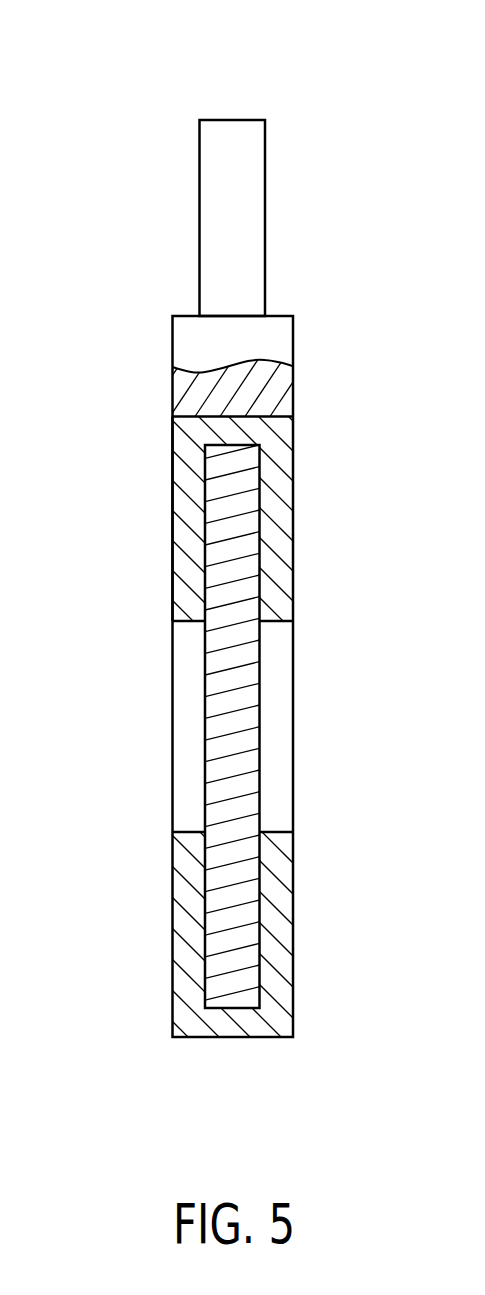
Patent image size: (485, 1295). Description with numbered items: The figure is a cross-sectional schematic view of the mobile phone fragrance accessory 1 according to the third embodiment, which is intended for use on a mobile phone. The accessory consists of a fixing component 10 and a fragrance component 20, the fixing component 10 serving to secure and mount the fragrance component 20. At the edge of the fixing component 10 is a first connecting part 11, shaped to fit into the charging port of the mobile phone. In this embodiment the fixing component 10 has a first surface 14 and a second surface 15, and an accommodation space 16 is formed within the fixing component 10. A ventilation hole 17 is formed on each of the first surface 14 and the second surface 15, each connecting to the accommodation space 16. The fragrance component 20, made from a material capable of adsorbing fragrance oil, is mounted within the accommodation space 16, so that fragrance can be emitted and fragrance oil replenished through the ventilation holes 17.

The mobile phone fragrance accessory 1 is at (86, 63).
The fixing component 10 is at (284, 458).
The first connecting part 11 is at (237, 390).
The first surface 14 is at (293, 525).
The second surface 15 is at (172, 465).
The accommodation space 16 is at (258, 847).
The ventilation hole 17 is at (187, 622).
The fragrance component 20 is at (232, 703).